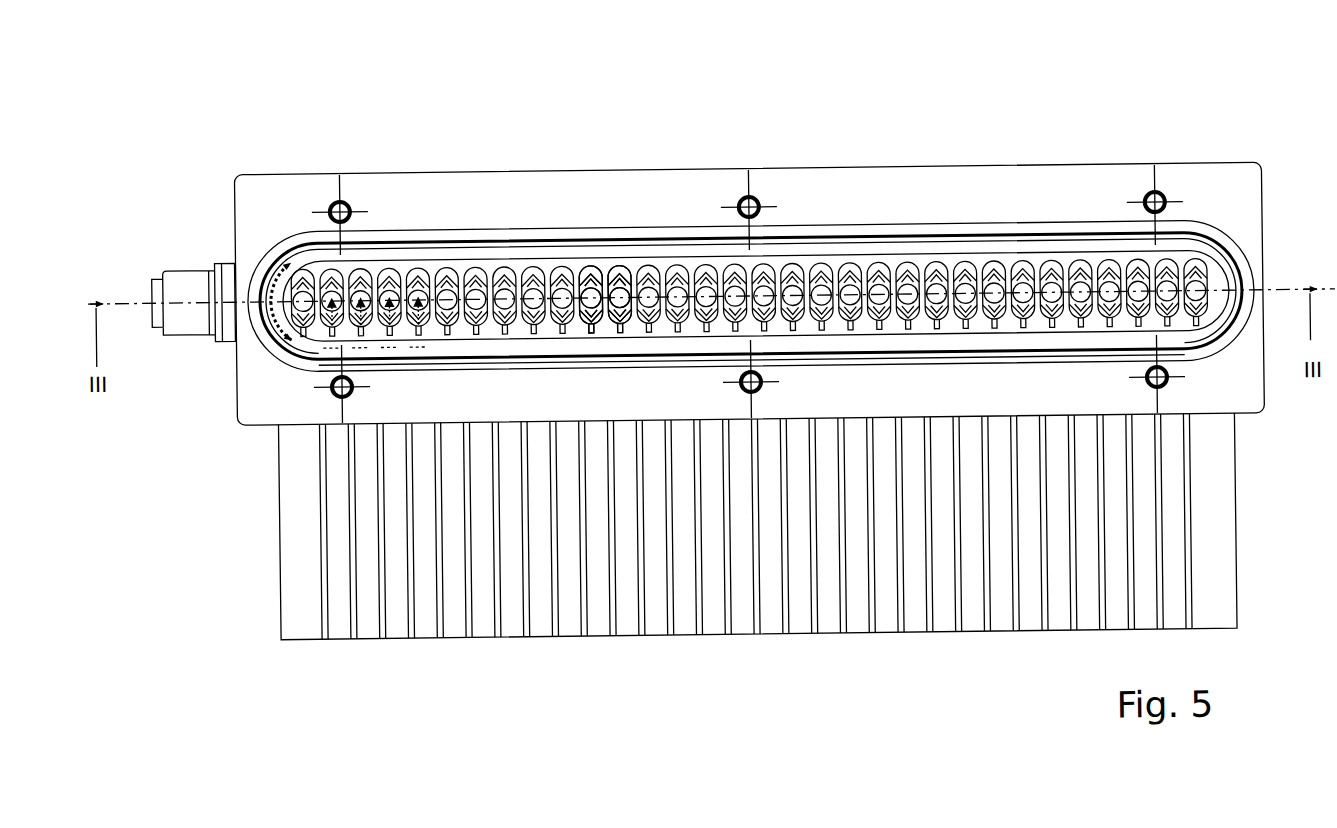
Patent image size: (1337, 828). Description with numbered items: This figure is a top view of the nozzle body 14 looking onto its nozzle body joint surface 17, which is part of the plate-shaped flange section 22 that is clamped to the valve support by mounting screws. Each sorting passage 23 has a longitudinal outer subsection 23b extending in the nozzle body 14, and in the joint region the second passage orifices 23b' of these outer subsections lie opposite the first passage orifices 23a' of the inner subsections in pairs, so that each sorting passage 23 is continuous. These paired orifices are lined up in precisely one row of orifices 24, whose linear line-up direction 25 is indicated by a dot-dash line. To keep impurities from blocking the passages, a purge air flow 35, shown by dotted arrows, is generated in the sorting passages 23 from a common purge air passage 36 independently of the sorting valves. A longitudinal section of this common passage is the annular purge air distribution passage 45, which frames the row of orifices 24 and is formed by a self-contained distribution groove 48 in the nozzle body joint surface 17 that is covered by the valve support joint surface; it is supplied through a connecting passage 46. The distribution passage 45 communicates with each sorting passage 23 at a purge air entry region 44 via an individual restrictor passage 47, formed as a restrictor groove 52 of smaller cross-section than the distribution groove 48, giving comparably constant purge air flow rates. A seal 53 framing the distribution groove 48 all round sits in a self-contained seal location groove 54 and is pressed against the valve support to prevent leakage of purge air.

The nozzle body 14 is at (1117, 151).
The nozzle body joint surface 17 is at (1214, 193).
The plate-shaped flange section 22 is at (1245, 406).
The sorting passage 23 is at (632, 224).
The longitudinal outer subsection 23b is at (632, 224).
The second passage orifice 23b' is at (887, 218).
The first passage orifice 23a' is at (887, 218).
The row of orifices 24 is at (1210, 288).
The line-up direction 25 is at (1018, 273).
The purge air flow 35 is at (272, 256).
The purge air passage 36 is at (705, 263).
The purge air distribution passage 45 is at (750, 237).
The distribution groove 48 is at (458, 251).
The connecting passage 46 is at (268, 297).
The purge air entry region 44 is at (570, 341).
The restrictor passage 47 is at (570, 341).
The restrictor groove 52 is at (620, 334).
The seal 53 is at (560, 226).
The seal location groove 54 is at (380, 228).